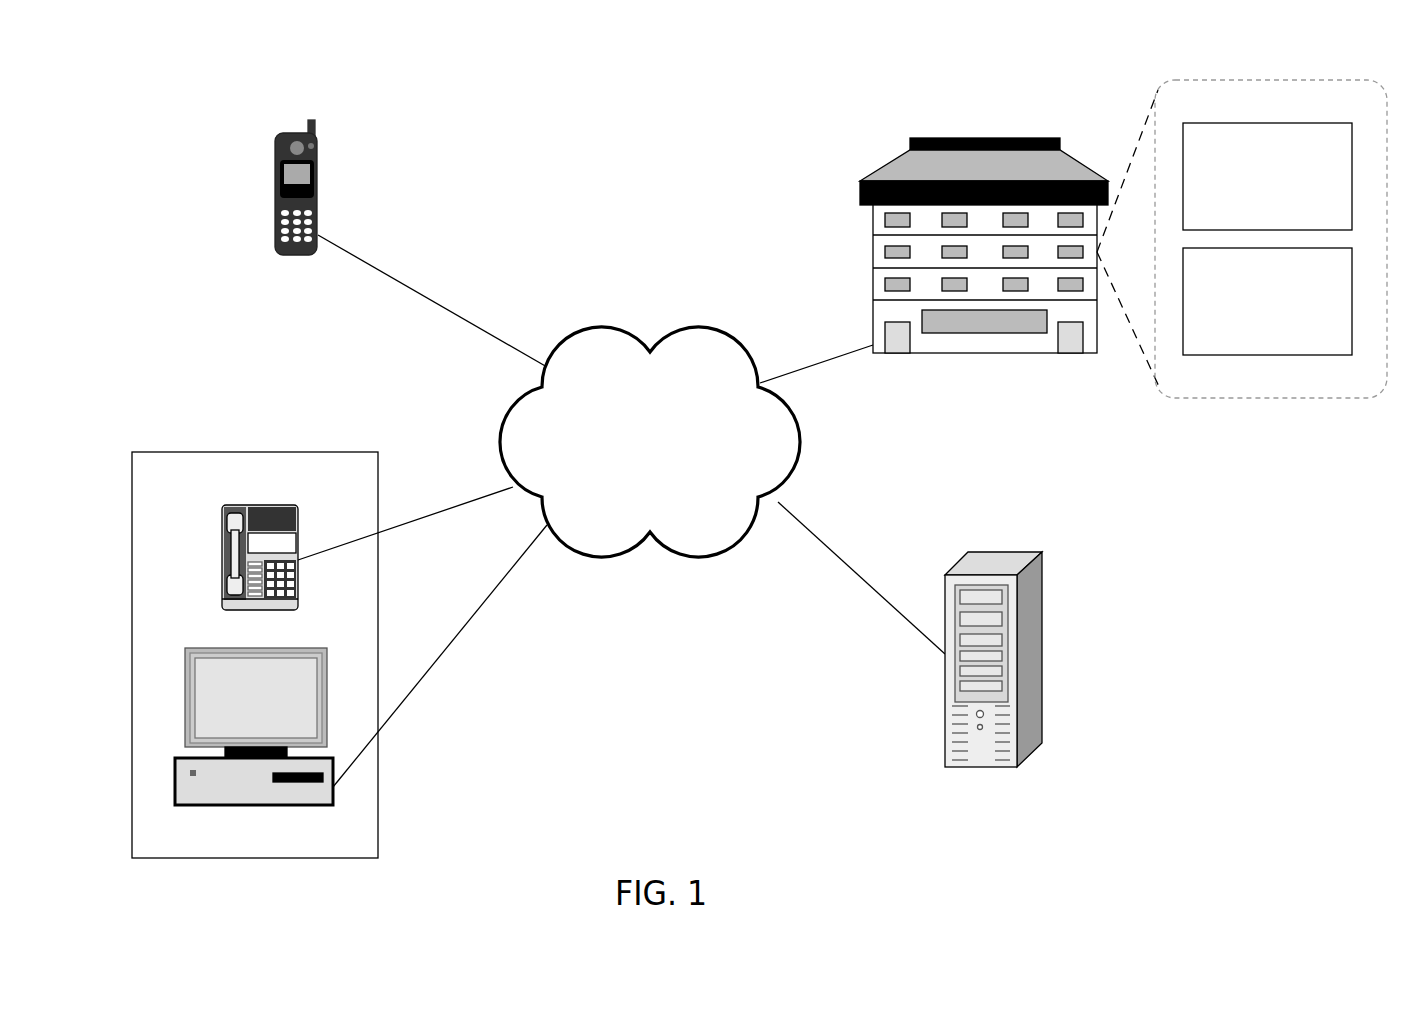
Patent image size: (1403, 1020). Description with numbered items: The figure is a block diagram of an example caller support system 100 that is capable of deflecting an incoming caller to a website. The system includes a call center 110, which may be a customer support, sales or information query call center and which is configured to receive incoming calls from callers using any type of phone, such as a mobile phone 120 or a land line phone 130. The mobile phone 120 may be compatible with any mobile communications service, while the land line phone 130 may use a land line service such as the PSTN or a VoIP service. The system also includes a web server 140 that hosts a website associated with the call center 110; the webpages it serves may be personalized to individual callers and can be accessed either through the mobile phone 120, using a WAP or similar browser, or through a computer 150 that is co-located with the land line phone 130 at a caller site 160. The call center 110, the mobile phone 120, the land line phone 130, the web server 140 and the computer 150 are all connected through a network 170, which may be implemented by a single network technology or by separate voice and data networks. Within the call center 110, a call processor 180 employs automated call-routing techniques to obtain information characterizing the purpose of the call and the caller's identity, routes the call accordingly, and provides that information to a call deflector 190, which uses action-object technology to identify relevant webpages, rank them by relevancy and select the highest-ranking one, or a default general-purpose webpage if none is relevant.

The caller support system 100 is at (218, 78).
The call center 110 is at (988, 138).
The mobile phone 120 is at (273, 195).
The land line phone 130 is at (257, 505).
The web server 140 is at (998, 550).
The computer 150 is at (256, 647).
The caller site 160 is at (183, 452).
The network 170 is at (699, 328).
The call processor 180 is at (1268, 123).
The call deflector 190 is at (1267, 355).